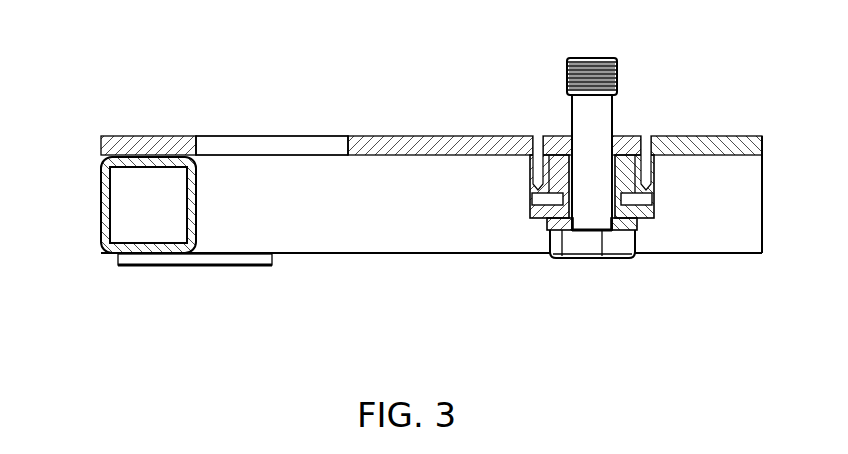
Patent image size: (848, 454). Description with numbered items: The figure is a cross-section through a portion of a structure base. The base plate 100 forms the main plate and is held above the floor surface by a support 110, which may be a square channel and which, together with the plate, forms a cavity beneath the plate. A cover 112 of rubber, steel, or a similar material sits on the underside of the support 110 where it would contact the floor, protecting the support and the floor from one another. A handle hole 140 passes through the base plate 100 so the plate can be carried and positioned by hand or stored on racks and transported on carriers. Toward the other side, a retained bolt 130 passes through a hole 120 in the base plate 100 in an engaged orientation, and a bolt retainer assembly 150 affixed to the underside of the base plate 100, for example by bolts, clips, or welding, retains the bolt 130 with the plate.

The base plate 100 is at (399, 126).
The support 110 is at (126, 220).
The cover 112 is at (221, 275).
The hole 120 is at (620, 125).
The retained bolt 130 is at (622, 91).
The handle hole 140 is at (243, 124).
The bolt retainer assembly 150 is at (519, 182).